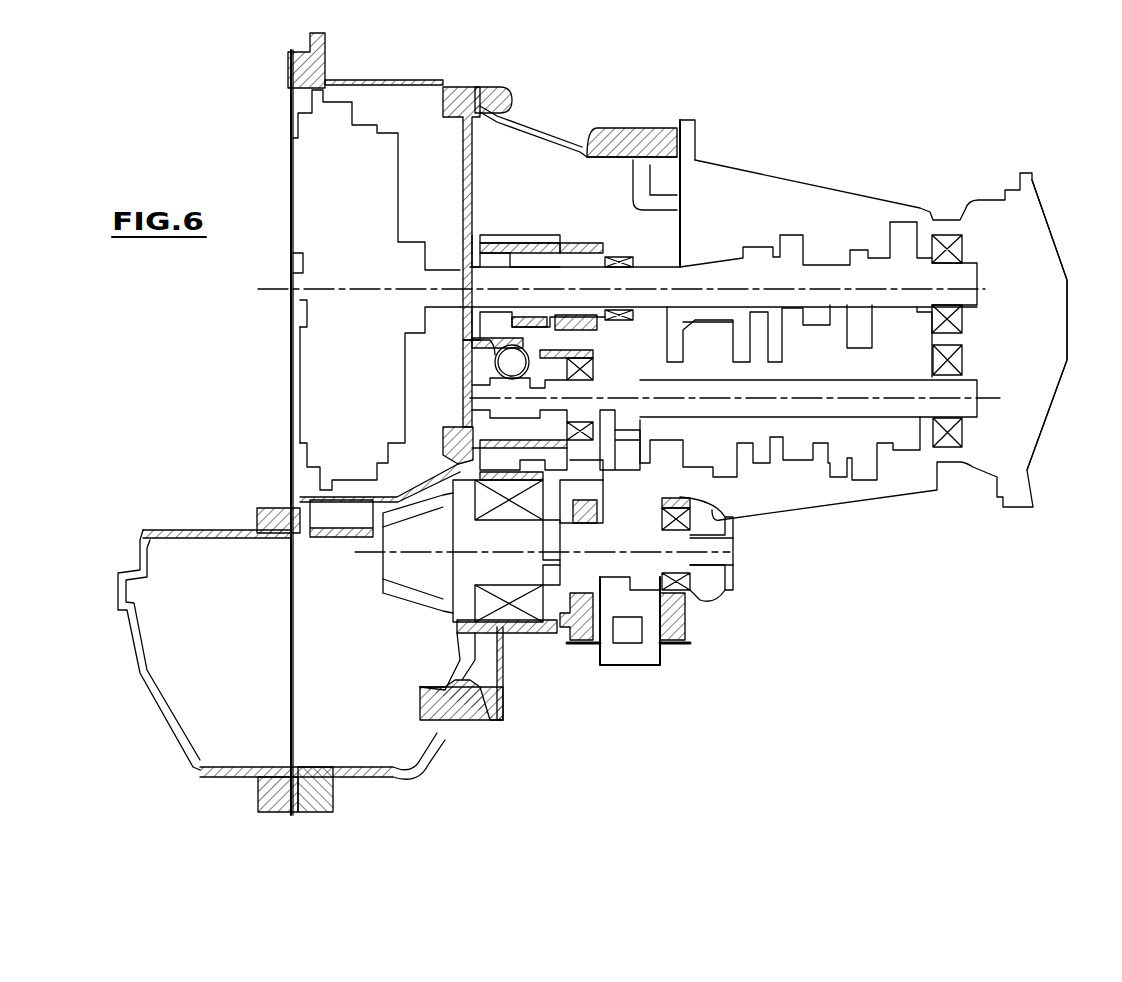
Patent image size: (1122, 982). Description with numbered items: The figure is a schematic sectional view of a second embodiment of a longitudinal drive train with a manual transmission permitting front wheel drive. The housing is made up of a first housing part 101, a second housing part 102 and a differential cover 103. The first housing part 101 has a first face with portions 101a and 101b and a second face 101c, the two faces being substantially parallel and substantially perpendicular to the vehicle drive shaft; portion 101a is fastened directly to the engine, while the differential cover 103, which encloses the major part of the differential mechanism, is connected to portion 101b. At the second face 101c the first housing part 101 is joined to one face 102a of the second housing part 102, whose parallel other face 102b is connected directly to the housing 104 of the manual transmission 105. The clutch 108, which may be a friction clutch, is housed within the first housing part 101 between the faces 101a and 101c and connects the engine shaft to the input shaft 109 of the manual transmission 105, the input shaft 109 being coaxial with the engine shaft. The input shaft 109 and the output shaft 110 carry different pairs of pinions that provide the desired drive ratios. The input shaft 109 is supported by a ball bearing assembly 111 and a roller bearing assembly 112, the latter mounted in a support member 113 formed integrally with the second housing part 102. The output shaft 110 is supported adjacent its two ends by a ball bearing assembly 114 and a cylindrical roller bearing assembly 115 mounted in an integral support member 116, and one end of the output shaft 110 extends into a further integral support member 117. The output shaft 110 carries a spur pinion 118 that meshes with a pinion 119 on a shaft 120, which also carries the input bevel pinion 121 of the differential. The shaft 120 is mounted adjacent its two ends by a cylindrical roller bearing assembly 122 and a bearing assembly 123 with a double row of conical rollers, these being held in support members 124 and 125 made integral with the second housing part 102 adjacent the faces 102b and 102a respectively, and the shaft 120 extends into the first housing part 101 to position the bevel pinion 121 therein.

The first housing part 101 is at (397, 82).
The first face portion 101a is at (288, 72).
The first face portion 101b is at (302, 540).
The second face 101c is at (463, 88).
The second housing part 102 is at (542, 128).
The face 102a is at (508, 80).
The face 102b is at (657, 126).
The differential cover 103 is at (140, 672).
The housing 104 is at (822, 187).
The manual transmission 105 is at (1000, 318).
The clutch 108 is at (325, 367).
The input shaft 109 is at (705, 275).
The output shaft 110 is at (993, 397).
The ball bearing assembly 111 is at (958, 250).
The roller bearing assembly 112 is at (617, 258).
The support member 113 is at (587, 323).
The ball bearing assembly 114 is at (958, 362).
The cylindrical roller bearing assembly 115 is at (596, 431).
The support member 116 is at (593, 363).
The support member 117 is at (485, 380).
The spur pinion 118 is at (620, 453).
The pinion 119 is at (630, 617).
The shaft 120 is at (370, 555).
The input bevel pinion 121 is at (405, 578).
The cylindrical roller bearing assembly 122 is at (705, 590).
The bearing assembly 123 is at (540, 502).
The support member 124 is at (700, 540).
The support member 125 is at (490, 482).